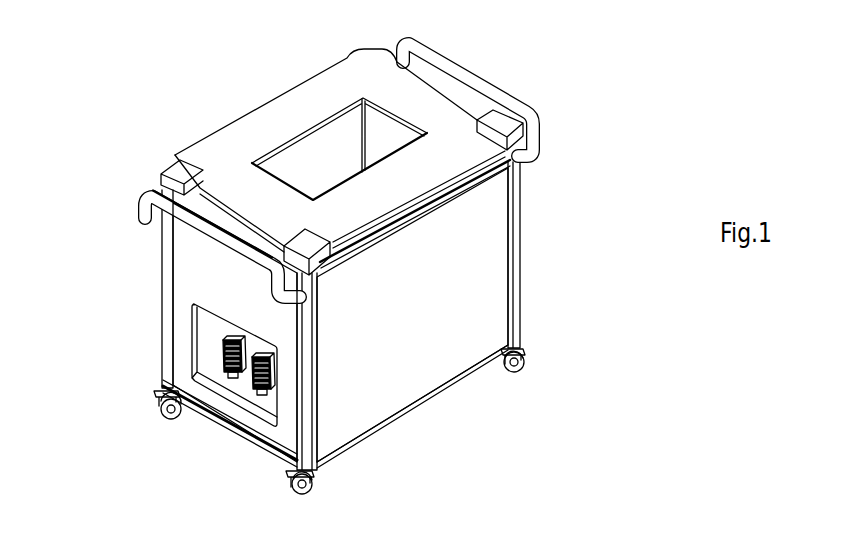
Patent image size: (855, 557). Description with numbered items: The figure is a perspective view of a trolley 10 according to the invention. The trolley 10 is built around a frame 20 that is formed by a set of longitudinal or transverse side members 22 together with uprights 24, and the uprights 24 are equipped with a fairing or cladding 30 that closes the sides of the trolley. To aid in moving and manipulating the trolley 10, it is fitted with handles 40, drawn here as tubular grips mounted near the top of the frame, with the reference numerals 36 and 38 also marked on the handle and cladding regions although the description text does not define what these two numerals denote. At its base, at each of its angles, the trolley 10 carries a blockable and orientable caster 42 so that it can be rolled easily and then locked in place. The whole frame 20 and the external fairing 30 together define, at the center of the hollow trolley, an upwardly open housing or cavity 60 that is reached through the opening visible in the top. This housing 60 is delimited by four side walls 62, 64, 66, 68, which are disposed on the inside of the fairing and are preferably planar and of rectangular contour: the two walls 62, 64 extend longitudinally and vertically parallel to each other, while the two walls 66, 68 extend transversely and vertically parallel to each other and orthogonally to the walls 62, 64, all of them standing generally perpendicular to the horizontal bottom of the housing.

The trolley 10 is at (333, 268).
The frame 20 is at (347, 268).
The side members 22 is at (237, 427).
The uprights 24 is at (516, 233).
The fairing 30 is at (350, 254).
The handle grip 36 is at (542, 86).
The front panel with connector recess 38 is at (203, 283).
The handles 40 is at (195, 222).
The caster 42 is at (311, 501).
The housing 60 is at (314, 140).
The side wall 62 is at (346, 131).
The side wall 64 is at (371, 150).
The side wall 66 is at (391, 133).
The side wall 68 is at (271, 167).